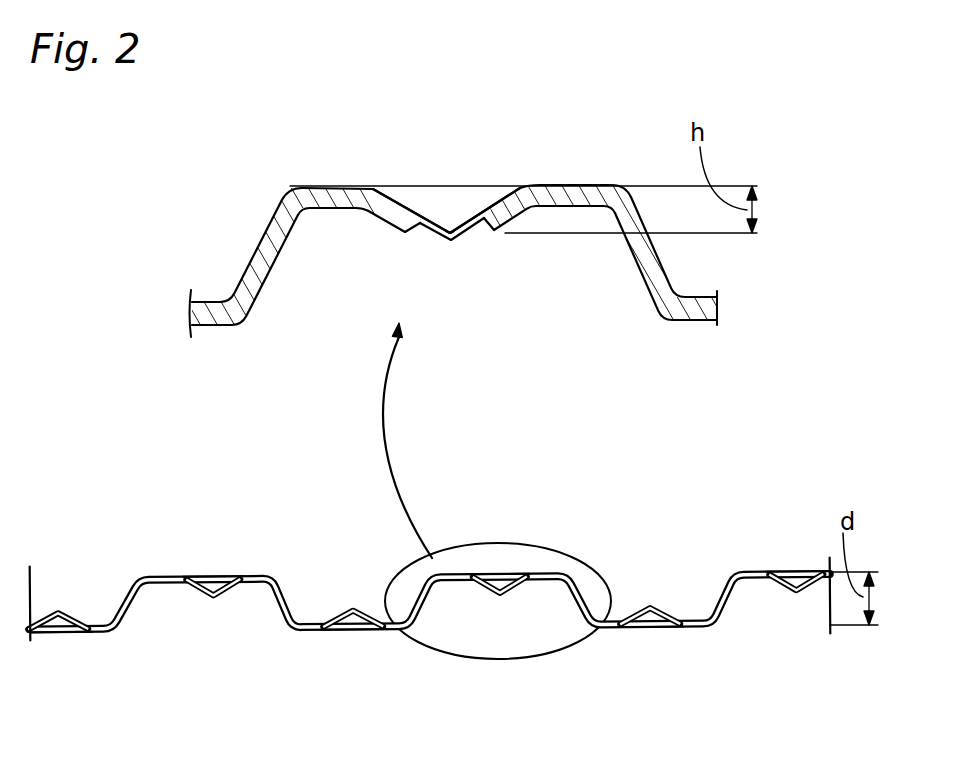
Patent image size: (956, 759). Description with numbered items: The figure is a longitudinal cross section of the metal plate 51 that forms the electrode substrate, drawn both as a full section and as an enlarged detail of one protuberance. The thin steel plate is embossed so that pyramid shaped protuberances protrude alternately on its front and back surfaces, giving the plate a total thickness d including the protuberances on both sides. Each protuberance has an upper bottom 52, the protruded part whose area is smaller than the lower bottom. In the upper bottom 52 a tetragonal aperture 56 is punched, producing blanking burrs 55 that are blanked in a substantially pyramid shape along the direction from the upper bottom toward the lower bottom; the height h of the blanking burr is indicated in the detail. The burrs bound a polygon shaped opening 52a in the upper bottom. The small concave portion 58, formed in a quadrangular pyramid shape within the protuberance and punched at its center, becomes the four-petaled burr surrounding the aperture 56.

The metal plate 51 is at (429, 606).
The upper bottom 52 is at (253, 577).
The opening 52a is at (477, 172).
The blanking burrs 55 is at (437, 228).
The aperture 56 is at (452, 265).
The small concave portion 58 is at (447, 200).